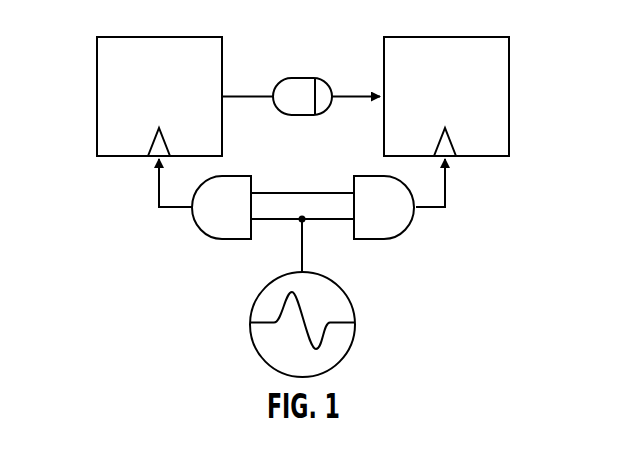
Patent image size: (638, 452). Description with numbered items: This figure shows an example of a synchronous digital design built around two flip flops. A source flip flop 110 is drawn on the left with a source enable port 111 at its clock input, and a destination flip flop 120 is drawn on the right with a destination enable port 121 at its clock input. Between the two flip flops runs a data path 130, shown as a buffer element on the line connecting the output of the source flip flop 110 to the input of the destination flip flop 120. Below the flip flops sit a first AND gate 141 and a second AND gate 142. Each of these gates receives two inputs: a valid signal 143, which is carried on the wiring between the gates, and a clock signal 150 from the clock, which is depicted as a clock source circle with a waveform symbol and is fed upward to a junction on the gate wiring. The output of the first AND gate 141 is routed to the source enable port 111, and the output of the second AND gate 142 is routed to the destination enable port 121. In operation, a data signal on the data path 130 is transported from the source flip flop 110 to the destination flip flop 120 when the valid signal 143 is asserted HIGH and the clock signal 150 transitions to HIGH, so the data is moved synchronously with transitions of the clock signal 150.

The source flip flop 110 is at (96, 33).
The source enable port 111 is at (146, 162).
The destination flip flop 120 is at (493, 32).
The destination enable port 121 is at (466, 168).
The data path 130 is at (296, 74).
The first AND gate 141 is at (240, 218).
The second AND gate 142 is at (402, 218).
The valid signal 143 is at (266, 191).
The clock signal 150 is at (309, 246).